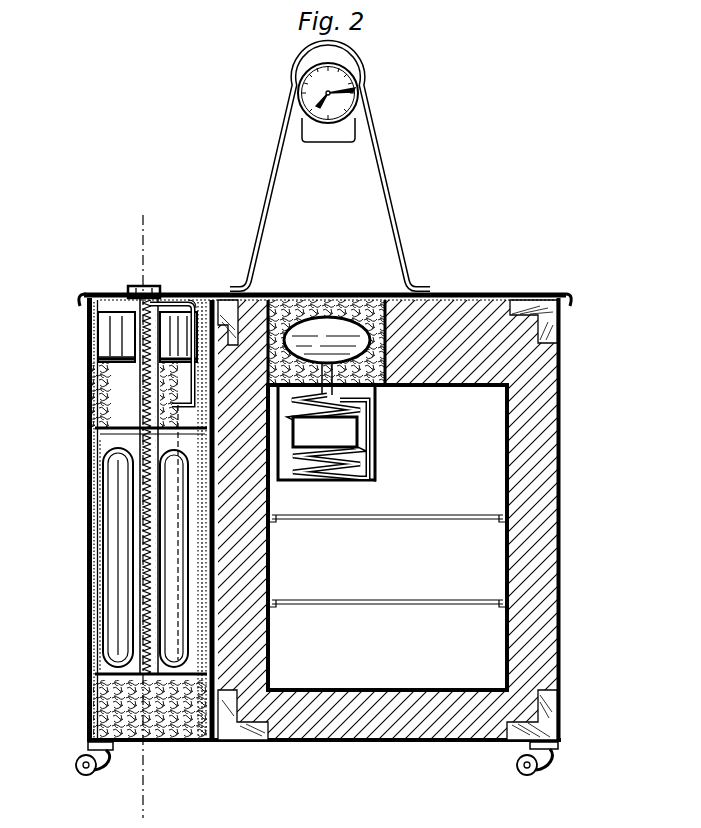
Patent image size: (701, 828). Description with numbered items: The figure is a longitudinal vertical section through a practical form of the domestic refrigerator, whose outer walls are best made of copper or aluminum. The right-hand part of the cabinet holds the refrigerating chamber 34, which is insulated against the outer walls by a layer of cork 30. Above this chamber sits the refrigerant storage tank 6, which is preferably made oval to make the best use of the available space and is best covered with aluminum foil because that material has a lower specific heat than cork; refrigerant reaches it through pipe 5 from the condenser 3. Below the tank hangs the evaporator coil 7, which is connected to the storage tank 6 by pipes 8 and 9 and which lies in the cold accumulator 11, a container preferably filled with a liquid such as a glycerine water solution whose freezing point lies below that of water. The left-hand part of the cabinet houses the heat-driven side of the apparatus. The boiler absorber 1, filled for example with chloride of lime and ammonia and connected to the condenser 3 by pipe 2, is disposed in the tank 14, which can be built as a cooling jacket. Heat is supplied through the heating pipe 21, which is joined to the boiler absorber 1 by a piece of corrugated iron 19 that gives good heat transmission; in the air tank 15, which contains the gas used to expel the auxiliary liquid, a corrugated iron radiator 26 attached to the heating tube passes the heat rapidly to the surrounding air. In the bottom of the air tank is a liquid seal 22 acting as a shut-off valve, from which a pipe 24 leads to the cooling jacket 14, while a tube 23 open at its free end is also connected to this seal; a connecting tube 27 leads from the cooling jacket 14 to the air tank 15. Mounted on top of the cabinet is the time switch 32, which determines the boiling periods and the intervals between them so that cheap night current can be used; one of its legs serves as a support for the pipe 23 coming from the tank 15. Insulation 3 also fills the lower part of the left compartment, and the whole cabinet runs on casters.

The boiler absorber 1 is at (112, 507).
The pipe 2 is at (100, 400).
The condenser 3 is at (133, 226).
The pipe 5 is at (336, 324).
The refrigerant storage tank 6 is at (349, 303).
The evaporator coil 7 is at (375, 466).
The pipe 8 is at (362, 394).
The pipe 9 is at (365, 423).
The cold accumulator 11 is at (374, 480).
The tank 14 is at (97, 607).
The air tank 15 is at (177, 310).
The piece of corrugated iron 19 is at (133, 562).
The heating pipe 21 is at (133, 470).
The liquid seal 22 is at (160, 385).
The tube 23 is at (279, 214).
The pipe 24 is at (161, 288).
The corrugated iron radiator 26 is at (197, 300).
The connecting tube 27 is at (123, 332).
The layer of cork 30 is at (535, 400).
The time switch 32 is at (368, 95).
The refrigerating chamber 34 is at (480, 494).